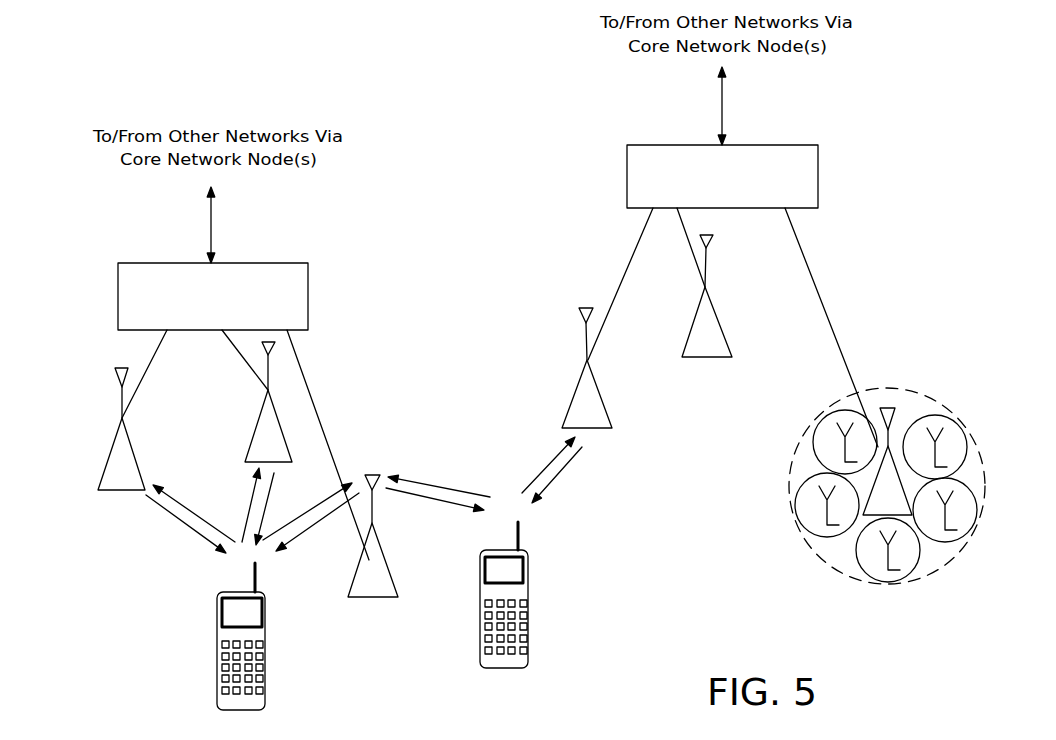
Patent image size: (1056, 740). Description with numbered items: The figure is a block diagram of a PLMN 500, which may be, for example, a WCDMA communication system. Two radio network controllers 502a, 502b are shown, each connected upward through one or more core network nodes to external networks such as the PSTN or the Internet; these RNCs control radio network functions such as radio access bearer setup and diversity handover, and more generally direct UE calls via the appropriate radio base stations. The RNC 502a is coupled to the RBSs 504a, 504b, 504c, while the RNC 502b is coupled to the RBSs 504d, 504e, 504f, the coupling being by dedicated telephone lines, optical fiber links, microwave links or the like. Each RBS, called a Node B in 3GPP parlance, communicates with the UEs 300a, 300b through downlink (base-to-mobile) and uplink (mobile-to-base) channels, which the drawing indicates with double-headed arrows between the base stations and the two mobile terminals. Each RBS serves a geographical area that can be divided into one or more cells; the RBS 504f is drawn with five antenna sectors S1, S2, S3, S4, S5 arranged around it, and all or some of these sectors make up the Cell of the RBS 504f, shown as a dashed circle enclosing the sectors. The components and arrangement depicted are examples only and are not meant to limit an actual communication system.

The PLMN 500 is at (478, 172).
The radio network controller 502a is at (308, 303).
The radio network controller 502b is at (818, 182).
The radio base station 504a is at (115, 438).
The radio base station 504b is at (256, 428).
The radio base station 504c is at (379, 543).
The radio base station 504d is at (599, 392).
The radio base station 504e is at (712, 303).
The radio base station 504f is at (897, 440).
The user equipment 300a is at (265, 633).
The user equipment 300b is at (528, 590).
The antenna sector S1 is at (945, 417).
The antenna sector S2 is at (970, 538).
The antenna sector S3 is at (922, 567).
The antenna sector S4 is at (795, 505).
The antenna sector S5 is at (812, 440).
The cell Cell is at (977, 447).